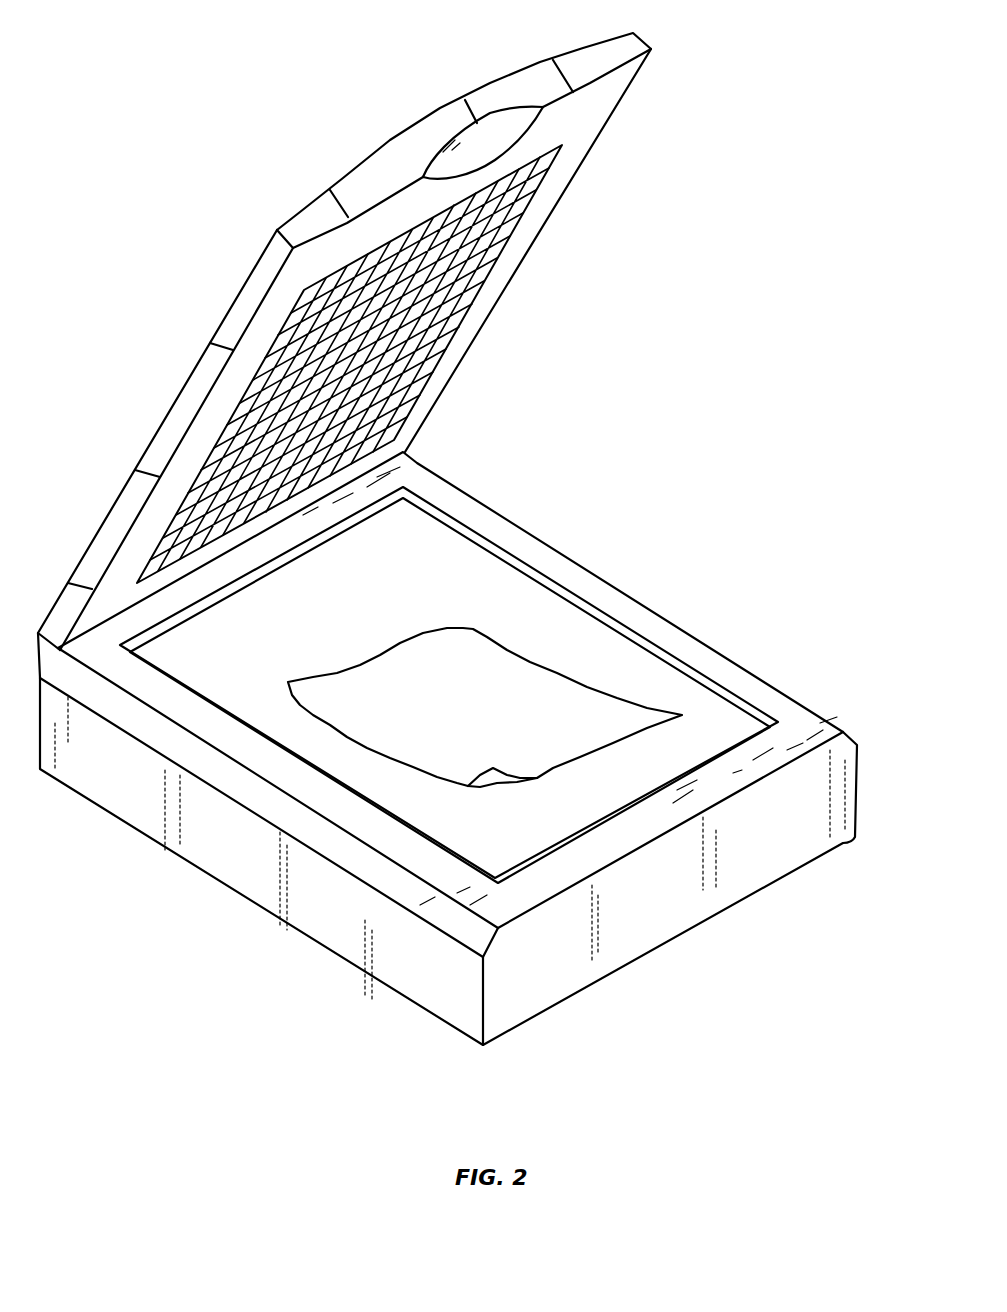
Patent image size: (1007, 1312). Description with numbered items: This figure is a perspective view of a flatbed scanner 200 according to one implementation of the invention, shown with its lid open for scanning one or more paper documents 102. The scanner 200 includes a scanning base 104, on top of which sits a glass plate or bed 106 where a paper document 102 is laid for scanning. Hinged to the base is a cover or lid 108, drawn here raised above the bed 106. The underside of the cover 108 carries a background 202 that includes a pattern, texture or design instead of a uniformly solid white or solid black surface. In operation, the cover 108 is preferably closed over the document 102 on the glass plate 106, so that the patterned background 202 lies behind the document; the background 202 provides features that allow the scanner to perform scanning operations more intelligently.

The scanner 200 is at (172, 45).
The cover 108 is at (572, 127).
The background 202 is at (412, 297).
The glass plate 106 is at (440, 568).
The paper document 102 is at (480, 690).
The scanning base 104 is at (787, 857).